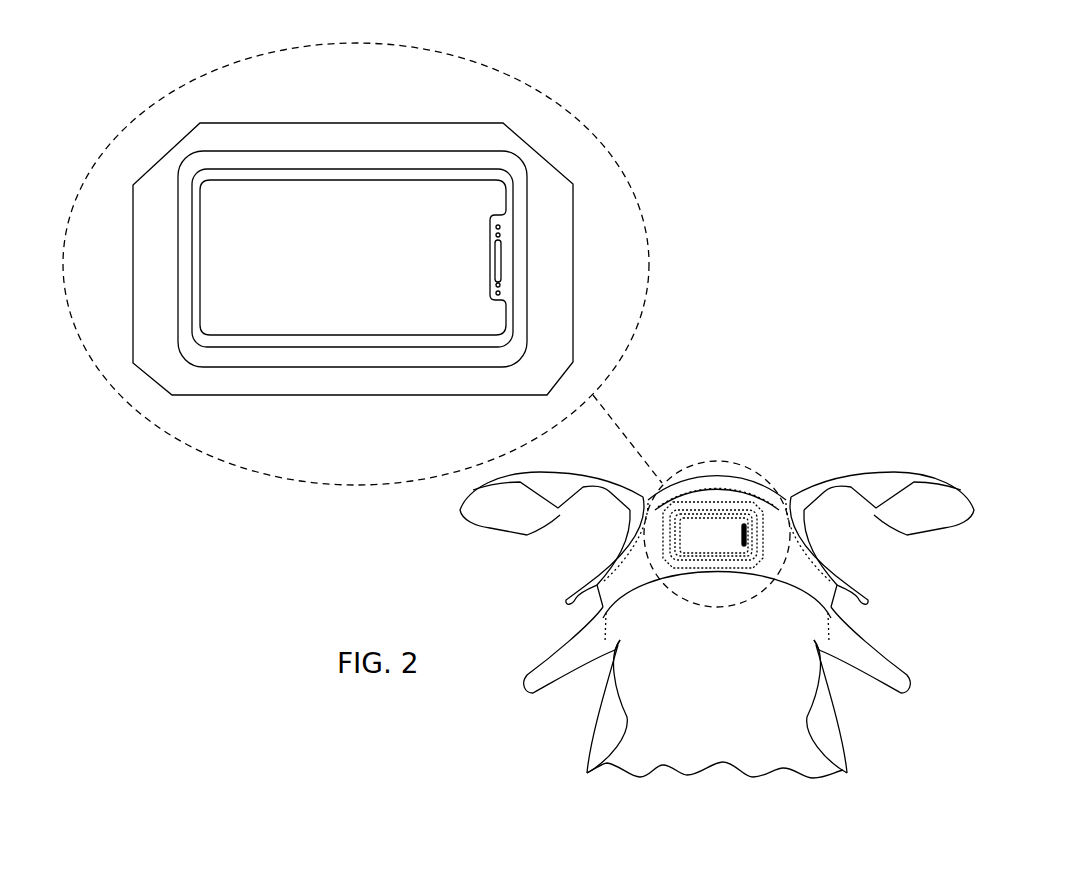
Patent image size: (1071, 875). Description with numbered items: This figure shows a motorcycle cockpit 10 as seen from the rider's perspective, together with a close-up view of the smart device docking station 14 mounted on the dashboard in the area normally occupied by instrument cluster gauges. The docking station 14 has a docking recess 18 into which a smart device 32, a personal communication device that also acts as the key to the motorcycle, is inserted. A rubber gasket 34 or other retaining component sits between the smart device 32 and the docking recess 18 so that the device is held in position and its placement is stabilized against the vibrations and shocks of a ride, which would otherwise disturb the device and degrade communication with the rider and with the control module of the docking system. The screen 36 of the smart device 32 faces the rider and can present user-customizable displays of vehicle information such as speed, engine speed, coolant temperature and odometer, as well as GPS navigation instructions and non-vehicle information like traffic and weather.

The cockpit 10 is at (823, 458).
The docking station 14 is at (352, 287).
The docking recess 18 is at (484, 367).
The smart device 32 is at (345, 349).
The rubber gasket 34 is at (421, 357).
The screen 36 is at (200, 259).